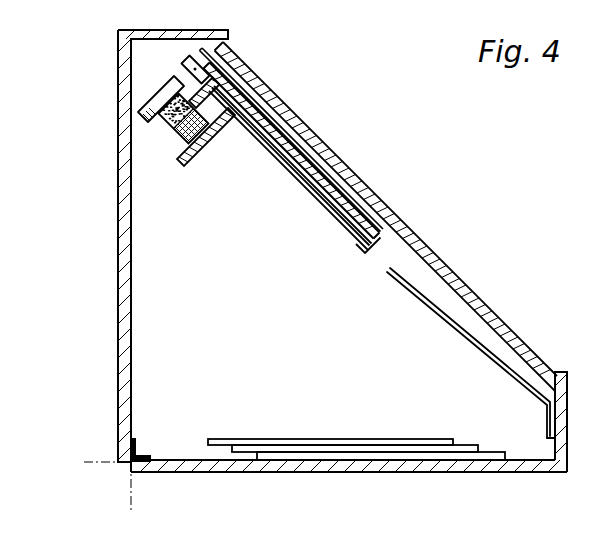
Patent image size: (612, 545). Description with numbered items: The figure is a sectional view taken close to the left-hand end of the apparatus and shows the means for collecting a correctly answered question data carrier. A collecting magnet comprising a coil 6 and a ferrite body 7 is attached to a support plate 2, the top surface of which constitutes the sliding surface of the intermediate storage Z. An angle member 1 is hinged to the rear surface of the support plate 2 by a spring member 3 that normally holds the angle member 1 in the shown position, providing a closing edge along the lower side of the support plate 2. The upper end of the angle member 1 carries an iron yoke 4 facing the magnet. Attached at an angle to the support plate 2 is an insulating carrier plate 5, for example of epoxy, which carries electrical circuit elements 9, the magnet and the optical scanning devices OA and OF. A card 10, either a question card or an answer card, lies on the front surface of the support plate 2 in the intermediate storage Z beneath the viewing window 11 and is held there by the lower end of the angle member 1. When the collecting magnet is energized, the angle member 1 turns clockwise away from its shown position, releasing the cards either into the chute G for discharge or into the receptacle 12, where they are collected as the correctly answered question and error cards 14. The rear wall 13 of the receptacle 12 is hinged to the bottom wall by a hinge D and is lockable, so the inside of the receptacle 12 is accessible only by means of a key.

The angle member 1 is at (352, 232).
The support plate 2 is at (333, 206).
The spring member 3 is at (244, 93).
The iron yoke 4 is at (182, 157).
The insulating carrier plate 5 is at (150, 130).
The coil 6 is at (157, 128).
The ferrite body 7 is at (177, 136).
The electrical circuit elements 9 is at (168, 101).
The card 10 is at (277, 110).
The viewing window 11 is at (340, 160).
The receptacle 12 is at (172, 470).
The rear wall 13 is at (121, 260).
The correctly answered question and error cards 14 is at (336, 443).
The intermediate storage Z is at (305, 138).
The chute G is at (437, 315).
The hinge D is at (107, 487).
The optical scanning device OF is at (183, 66).
The optical scanning device OA is at (180, 82).